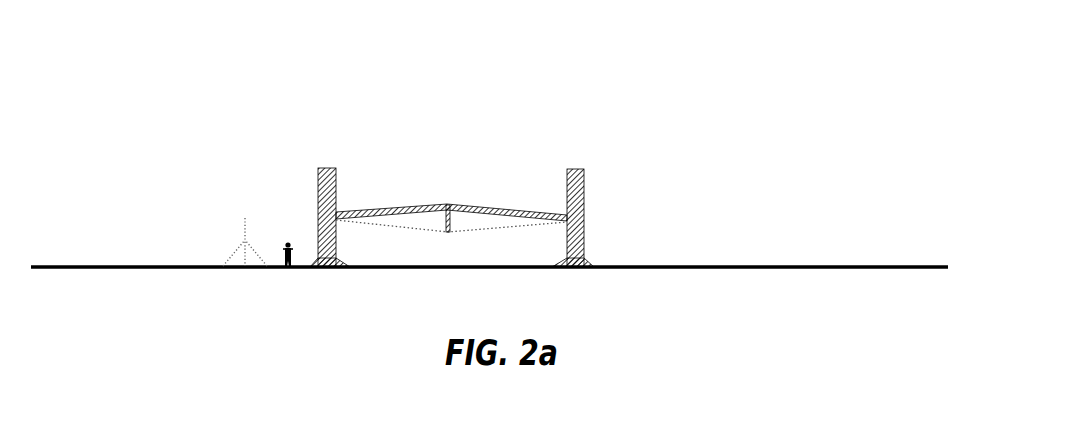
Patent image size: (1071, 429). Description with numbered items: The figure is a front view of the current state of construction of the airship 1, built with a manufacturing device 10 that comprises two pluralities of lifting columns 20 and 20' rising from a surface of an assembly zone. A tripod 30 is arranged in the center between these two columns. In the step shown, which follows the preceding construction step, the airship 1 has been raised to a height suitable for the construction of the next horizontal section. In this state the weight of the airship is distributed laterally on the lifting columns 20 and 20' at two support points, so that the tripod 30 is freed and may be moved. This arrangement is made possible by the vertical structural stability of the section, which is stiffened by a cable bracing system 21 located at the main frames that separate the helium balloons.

The airship 1 is at (517, 190).
The manufacturing device 10 is at (329, 278).
The lifting columns 20 is at (337, 186).
The lifting columns 20' is at (582, 186).
The cable bracing system 21 is at (440, 218).
The tripod 30 is at (232, 278).